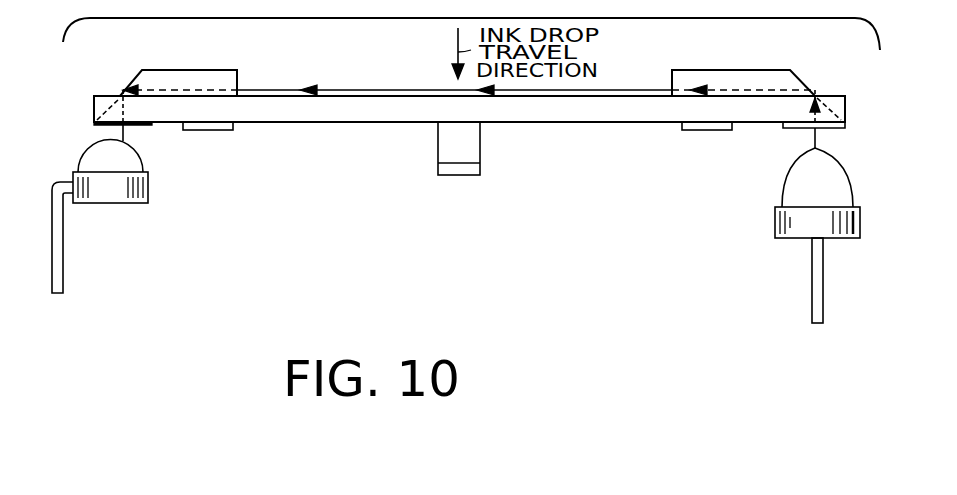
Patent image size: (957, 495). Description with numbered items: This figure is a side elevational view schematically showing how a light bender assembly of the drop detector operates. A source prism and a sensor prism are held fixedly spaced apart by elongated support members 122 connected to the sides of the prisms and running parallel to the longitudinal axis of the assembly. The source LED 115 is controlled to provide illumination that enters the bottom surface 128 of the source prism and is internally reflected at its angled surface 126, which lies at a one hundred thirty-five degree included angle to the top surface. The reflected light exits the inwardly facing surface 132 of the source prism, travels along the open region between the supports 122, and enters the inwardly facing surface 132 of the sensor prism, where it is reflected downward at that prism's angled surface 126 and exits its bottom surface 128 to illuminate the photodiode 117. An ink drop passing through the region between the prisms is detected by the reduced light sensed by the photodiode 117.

The elongated support member 122 is at (407, 113).
The angled surface 126 is at (134, 80).
The inwardly facing surface 132 is at (237, 78).
The bottom surface 128 is at (110, 123).
The photodiode 117 is at (148, 188).
The source LED 115 is at (775, 221).